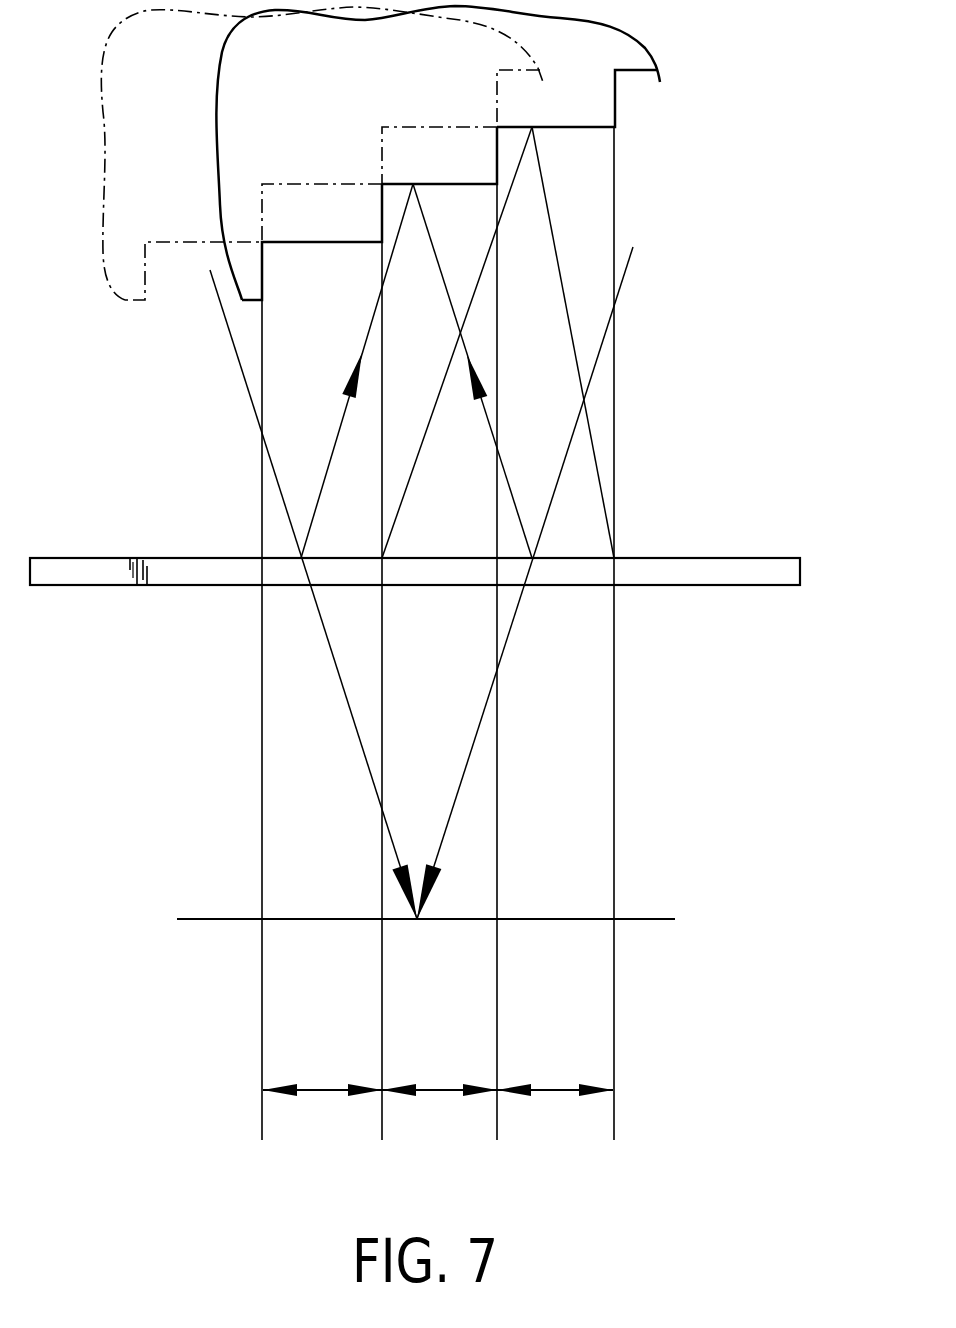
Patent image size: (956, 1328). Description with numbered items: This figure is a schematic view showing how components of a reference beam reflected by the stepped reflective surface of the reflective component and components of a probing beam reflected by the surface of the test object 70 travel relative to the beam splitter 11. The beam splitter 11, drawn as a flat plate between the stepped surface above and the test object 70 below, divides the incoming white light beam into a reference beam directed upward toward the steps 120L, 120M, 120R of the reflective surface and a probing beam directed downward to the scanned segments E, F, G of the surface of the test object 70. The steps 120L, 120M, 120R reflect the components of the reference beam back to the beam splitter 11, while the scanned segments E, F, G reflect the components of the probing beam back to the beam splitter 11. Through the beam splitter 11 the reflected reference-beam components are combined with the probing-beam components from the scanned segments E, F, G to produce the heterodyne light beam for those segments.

The beam splitter 11 is at (668, 572).
The test object 70 is at (647, 919).
The step of the reflective surface 120L is at (253, 242).
The step of the reflective surface 120M is at (388, 155).
The step of the reflective surface 120R is at (528, 98).
The scanned segment E is at (322, 1073).
The scanned segment F is at (439, 1073).
The scanned segment G is at (555, 1073).